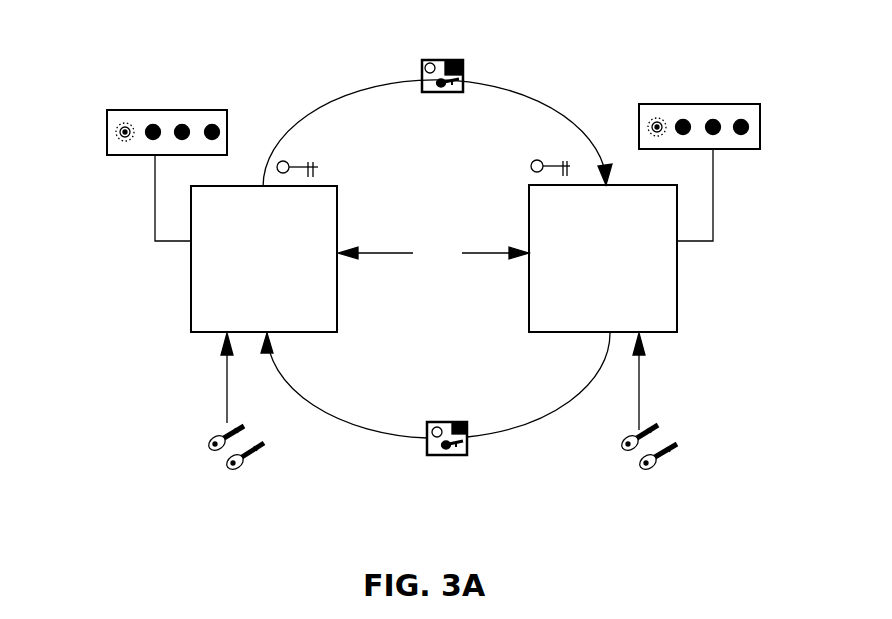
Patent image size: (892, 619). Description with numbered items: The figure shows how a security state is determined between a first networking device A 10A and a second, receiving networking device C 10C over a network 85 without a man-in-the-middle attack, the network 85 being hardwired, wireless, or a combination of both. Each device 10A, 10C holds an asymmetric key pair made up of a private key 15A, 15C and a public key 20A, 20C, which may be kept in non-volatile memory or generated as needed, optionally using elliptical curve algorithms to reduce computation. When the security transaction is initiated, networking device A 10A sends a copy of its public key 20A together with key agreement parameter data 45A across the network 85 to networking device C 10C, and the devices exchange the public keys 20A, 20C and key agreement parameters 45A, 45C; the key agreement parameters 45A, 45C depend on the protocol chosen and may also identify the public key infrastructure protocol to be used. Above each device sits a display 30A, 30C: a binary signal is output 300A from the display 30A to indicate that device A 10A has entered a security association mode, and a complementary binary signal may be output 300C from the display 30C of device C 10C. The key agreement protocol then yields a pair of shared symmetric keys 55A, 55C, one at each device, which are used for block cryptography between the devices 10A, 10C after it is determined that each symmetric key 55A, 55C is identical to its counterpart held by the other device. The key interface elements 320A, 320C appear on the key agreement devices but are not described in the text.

The networking device A 10A is at (331, 324).
The networking device C 10C is at (671, 324).
The display 30A is at (190, 110).
The display 30C is at (723, 104).
The binary signal output 300A is at (118, 133).
The complementary binary signal output 300C is at (648, 128).
The key agreement parameter data 45A is at (449, 60).
The key agreement parameter data 45C is at (455, 422).
The key interface A 320A is at (445, 93).
The key interface C 320C is at (450, 455).
The public key 20A is at (457, 93).
The public key 20C is at (462, 455).
The symmetric key 55A is at (318, 166).
The symmetric key 55C is at (531, 163).
The network 85 is at (433, 253).
The private key 15A is at (248, 468).
The private key 15C is at (660, 468).